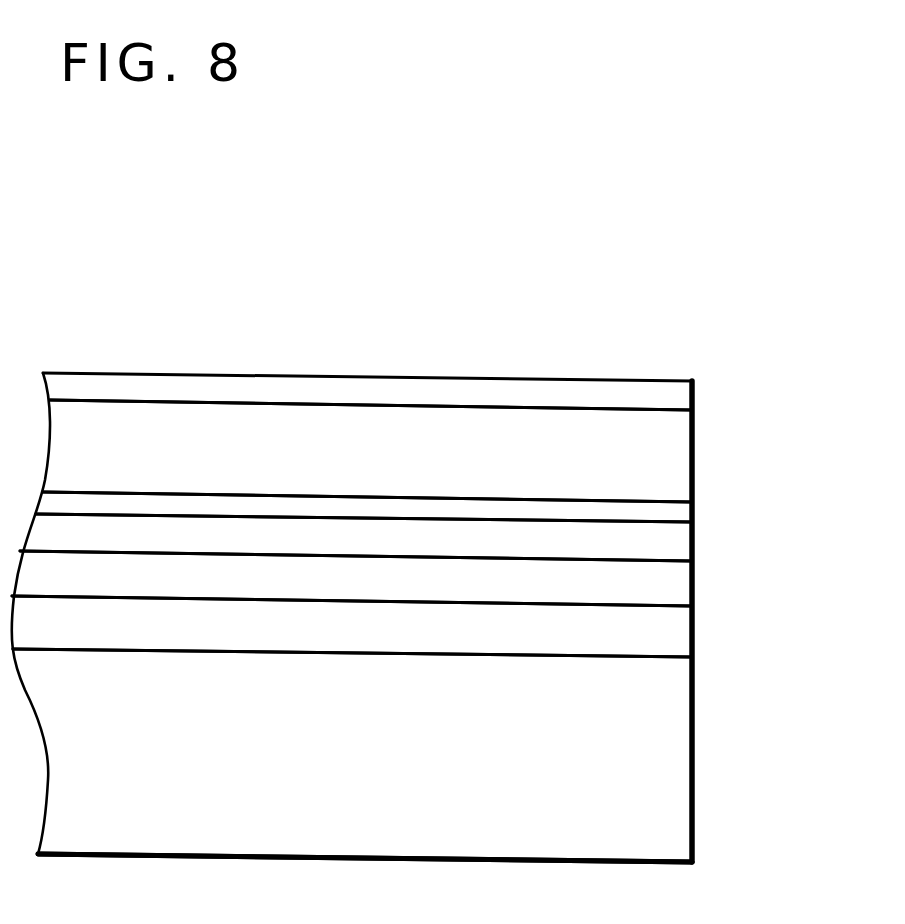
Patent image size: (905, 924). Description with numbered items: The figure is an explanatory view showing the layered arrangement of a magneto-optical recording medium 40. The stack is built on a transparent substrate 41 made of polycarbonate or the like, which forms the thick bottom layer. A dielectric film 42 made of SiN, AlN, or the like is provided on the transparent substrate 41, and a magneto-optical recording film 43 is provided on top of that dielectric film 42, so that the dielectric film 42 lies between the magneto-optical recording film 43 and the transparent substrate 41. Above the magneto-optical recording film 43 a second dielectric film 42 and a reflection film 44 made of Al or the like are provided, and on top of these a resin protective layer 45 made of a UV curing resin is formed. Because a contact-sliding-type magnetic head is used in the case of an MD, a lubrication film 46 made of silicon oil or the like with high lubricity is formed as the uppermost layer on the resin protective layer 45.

The magneto-optical recording medium 40 is at (640, 314).
The transparent substrate 41 is at (694, 745).
The dielectric film 42 is at (694, 545).
The magneto-optical recording film 43 is at (694, 590).
The reflection film 44 is at (694, 507).
The resin protective layer 45 is at (694, 448).
The lubrication film 46 is at (694, 393).